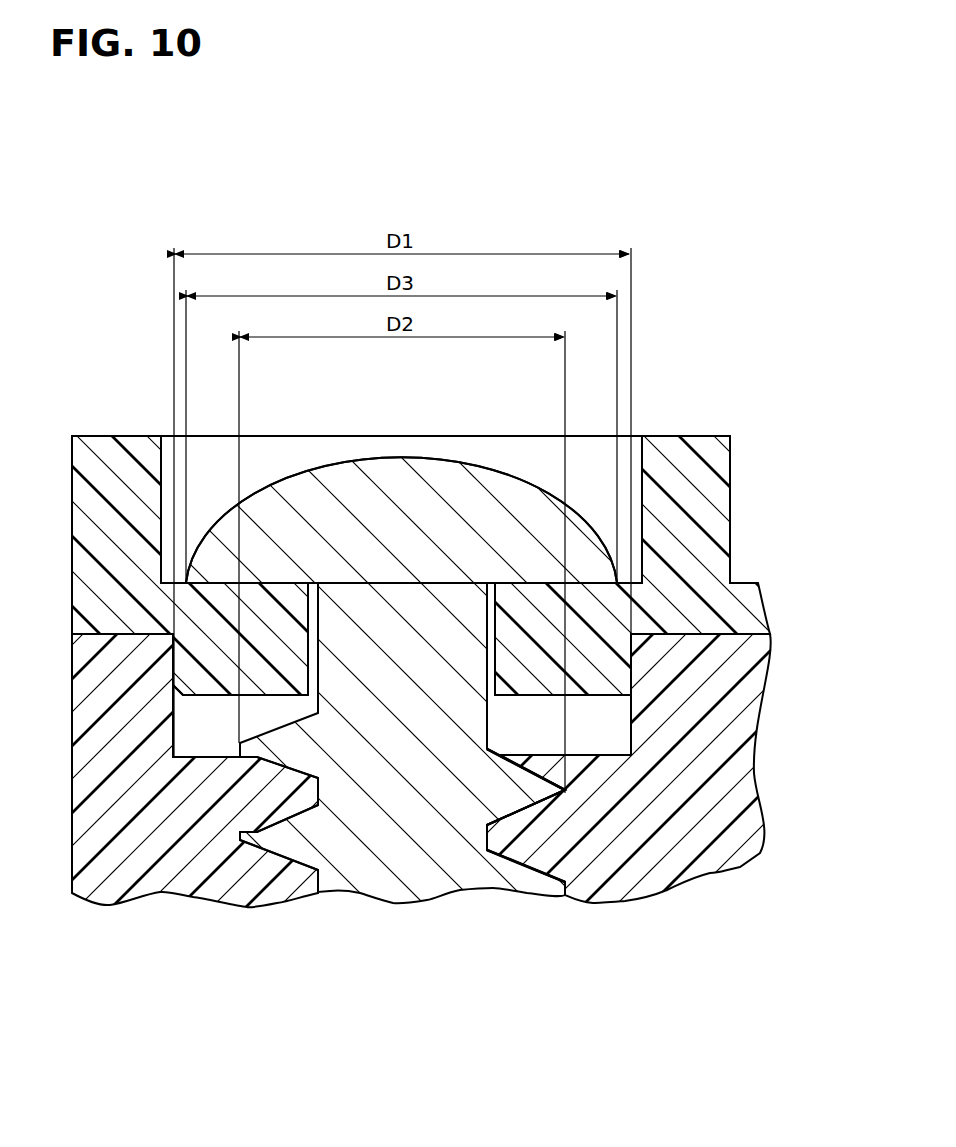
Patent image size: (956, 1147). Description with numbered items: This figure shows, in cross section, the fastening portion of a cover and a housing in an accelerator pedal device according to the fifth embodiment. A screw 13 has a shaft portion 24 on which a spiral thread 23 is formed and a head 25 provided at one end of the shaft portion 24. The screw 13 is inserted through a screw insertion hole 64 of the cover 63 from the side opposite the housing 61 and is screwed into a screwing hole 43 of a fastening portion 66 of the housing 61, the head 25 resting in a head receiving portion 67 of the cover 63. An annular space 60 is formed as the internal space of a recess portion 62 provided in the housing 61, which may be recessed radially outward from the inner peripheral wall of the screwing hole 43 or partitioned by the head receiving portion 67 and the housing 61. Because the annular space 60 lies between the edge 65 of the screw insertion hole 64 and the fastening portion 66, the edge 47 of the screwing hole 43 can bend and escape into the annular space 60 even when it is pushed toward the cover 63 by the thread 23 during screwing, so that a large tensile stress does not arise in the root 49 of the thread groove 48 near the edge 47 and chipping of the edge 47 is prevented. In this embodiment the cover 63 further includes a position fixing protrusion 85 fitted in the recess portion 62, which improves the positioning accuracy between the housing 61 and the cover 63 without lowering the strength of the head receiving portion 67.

The screw 13 is at (303, 462).
The spiral thread 23 is at (513, 795).
The shaft portion 24 is at (392, 858).
The head 25 is at (370, 449).
The screwing hole 43 is at (503, 823).
The edge of screwing hole 47 is at (510, 757).
The thread groove 48 is at (575, 843).
The root of thread groove 49 is at (520, 795).
The annular space 60 is at (505, 722).
The housing 61 is at (72, 840).
The recess portion 62 is at (217, 753).
The cover 63 is at (72, 472).
The screw insertion hole 64 is at (486, 630).
The edge of screw insertion hole 65 is at (503, 722).
The fastening portion 66 is at (598, 867).
The head receiving portion 67 is at (515, 613).
The position fixing protrusion 85 is at (193, 680).